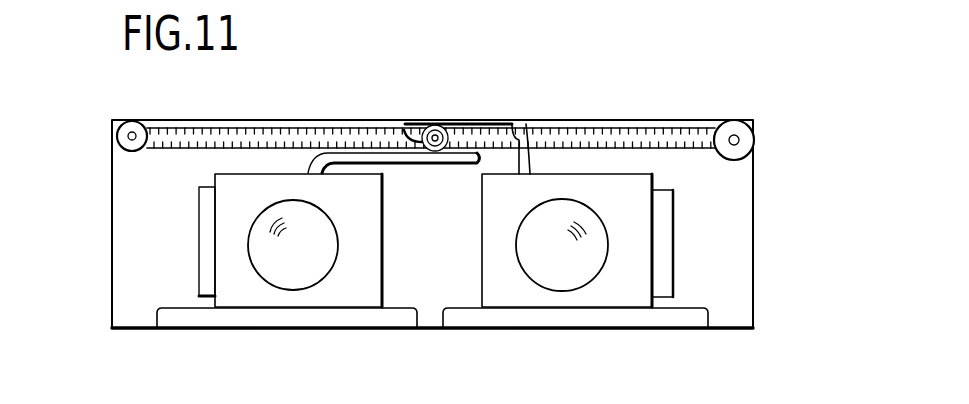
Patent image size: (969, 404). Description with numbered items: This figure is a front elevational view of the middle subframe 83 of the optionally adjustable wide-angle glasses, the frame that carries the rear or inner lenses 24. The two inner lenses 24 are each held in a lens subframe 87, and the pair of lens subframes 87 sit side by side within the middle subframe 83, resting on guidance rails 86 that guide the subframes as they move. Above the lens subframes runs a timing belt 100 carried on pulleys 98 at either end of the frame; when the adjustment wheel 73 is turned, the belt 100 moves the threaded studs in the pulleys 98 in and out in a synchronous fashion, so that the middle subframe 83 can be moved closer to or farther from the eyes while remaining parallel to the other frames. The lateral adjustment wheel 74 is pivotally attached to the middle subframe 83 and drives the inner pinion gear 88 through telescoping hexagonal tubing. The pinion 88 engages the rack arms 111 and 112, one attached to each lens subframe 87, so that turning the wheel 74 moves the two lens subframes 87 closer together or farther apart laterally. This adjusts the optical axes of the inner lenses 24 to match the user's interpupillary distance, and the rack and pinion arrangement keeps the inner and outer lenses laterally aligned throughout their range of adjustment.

The inner lenses 24 is at (283, 280).
The adjustment wheel 73 is at (746, 123).
The lateral adjustment wheel 74 is at (436, 123).
The middle subframe 83 is at (753, 188).
The guidance rails 86 is at (463, 318).
The lens subframes 87 is at (228, 193).
The inner pinion gear 88 is at (417, 140).
The pulleys 98 is at (117, 133).
The timing belt 100 is at (593, 138).
The rack arm 111 is at (510, 127).
The rack arm 112 is at (325, 155).